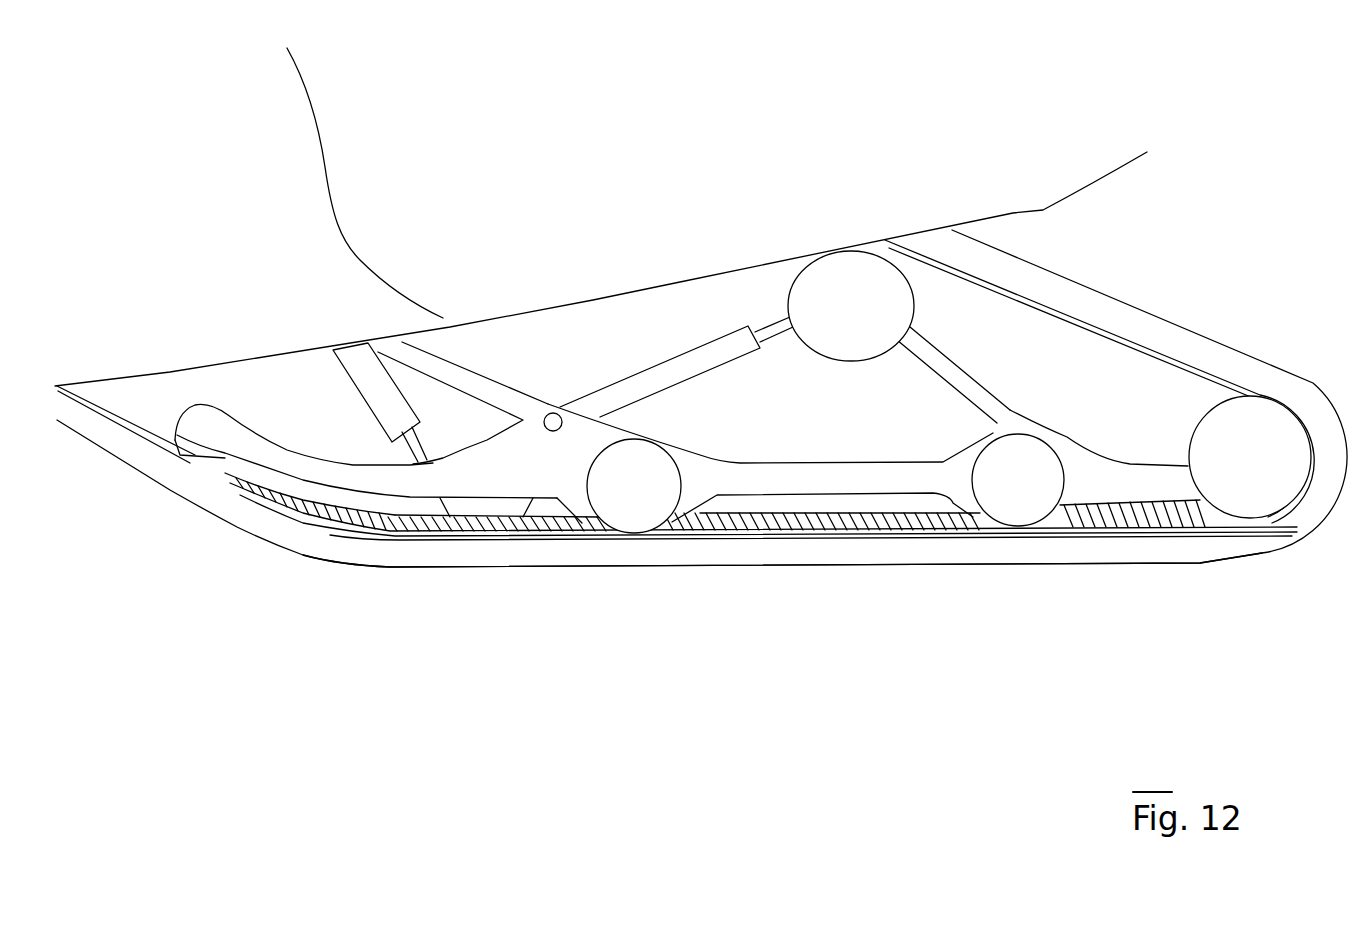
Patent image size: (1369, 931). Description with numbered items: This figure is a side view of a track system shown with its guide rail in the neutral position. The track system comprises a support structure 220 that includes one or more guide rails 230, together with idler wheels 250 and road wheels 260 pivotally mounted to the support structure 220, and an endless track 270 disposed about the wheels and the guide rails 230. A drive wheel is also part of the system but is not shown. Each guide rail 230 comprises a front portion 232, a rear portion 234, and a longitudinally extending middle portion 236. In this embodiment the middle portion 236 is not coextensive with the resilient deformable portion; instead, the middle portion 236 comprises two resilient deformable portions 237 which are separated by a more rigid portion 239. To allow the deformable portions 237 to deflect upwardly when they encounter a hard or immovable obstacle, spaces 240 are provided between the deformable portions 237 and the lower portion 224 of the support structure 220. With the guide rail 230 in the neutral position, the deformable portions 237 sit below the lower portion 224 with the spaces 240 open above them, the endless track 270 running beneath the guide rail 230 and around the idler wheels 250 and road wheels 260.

The support structure 220 is at (928, 362).
The lower portion of the support structure 224 is at (1087, 495).
The guide rail 230 is at (578, 527).
The front portion 232 is at (201, 453).
The rear portion 234 is at (1203, 513).
The middle portion 236 is at (728, 532).
The resilient deformable portion 237 is at (398, 523).
The rigid portion 239 is at (685, 520).
The space 240 is at (492, 508).
The idler wheel 250 is at (893, 278).
The road wheel 260 is at (634, 522).
The endless track 270 is at (1110, 313).